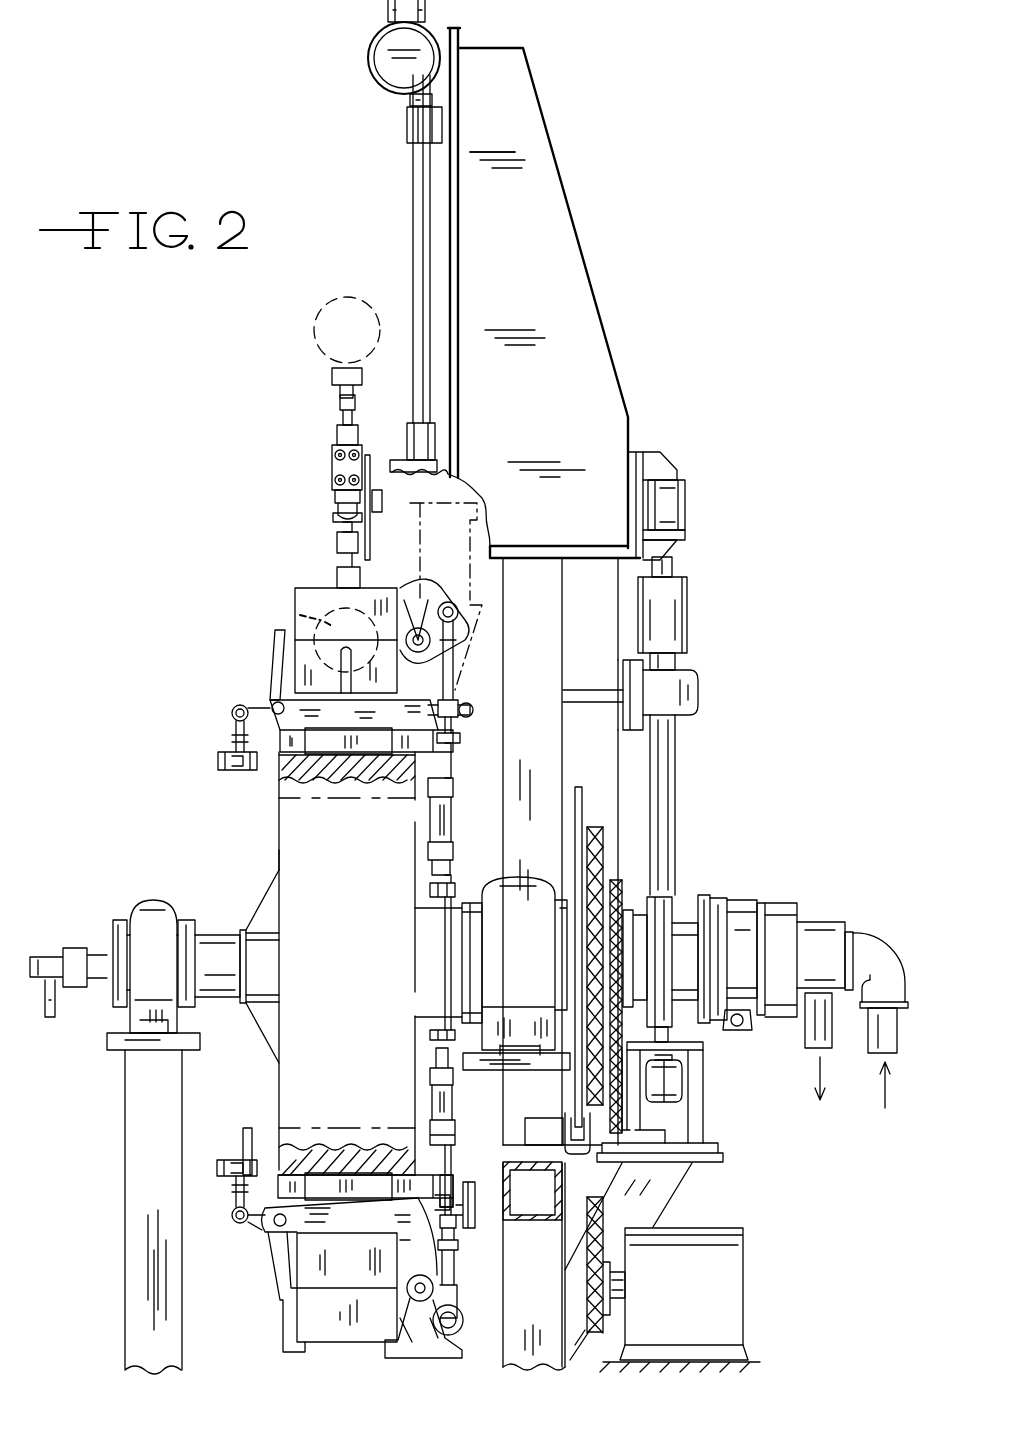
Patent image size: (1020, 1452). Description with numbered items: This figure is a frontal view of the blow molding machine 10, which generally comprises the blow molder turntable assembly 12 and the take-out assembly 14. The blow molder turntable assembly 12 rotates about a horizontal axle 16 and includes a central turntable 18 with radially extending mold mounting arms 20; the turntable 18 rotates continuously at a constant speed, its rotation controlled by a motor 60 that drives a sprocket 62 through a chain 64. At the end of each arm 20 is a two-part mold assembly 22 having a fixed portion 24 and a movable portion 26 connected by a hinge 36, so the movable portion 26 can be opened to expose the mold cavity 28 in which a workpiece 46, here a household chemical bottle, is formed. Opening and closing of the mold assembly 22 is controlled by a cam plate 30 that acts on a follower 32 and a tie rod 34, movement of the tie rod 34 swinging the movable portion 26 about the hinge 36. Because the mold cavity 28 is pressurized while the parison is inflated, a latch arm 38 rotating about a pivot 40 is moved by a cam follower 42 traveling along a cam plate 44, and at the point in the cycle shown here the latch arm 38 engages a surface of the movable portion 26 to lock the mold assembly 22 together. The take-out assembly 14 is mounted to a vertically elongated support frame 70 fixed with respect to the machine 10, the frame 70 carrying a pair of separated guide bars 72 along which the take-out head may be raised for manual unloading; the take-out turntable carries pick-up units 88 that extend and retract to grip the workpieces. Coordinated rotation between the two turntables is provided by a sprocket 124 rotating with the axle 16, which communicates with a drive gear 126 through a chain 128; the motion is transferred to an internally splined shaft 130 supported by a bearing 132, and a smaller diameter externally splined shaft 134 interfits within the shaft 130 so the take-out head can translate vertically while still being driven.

The blow molding machine 10 is at (730, 657).
The blow molder turntable assembly 12 is at (278, 812).
The take-out assembly 14 is at (630, 387).
The horizontal axle 16 is at (232, 900).
The central turntable 18 is at (278, 855).
The mold mounting arm 20 is at (278, 1162).
The mold assembly 22 is at (320, 590).
The fixed portion 24 is at (295, 660).
The movable portion 26 is at (300, 600).
The mold cavity 28 is at (300, 602).
The cam plate 30 is at (465, 1185).
The follower 32 is at (463, 1215).
The tie rod 34 is at (458, 1300).
The hinge 36 is at (428, 593).
The latch arm 38 is at (298, 605).
The pivot 40 is at (270, 706).
The cam follower 42 is at (262, 1225).
The cam plate 44 is at (245, 1131).
The workpiece 46 is at (312, 333).
The motor 60 is at (708, 1310).
The sprocket 62 is at (593, 830).
The chain 64 is at (625, 1216).
The support frame 70 is at (583, 253).
The guide bars 72 is at (413, 184).
The pick-up unit 88 is at (328, 378).
The sprocket 124 is at (644, 880).
The drive gear 126 is at (573, 1144).
The chain 128 is at (635, 1087).
The internally splined shaft 130 is at (677, 766).
The bearing 132 is at (700, 690).
The externally splined shaft 134 is at (670, 560).